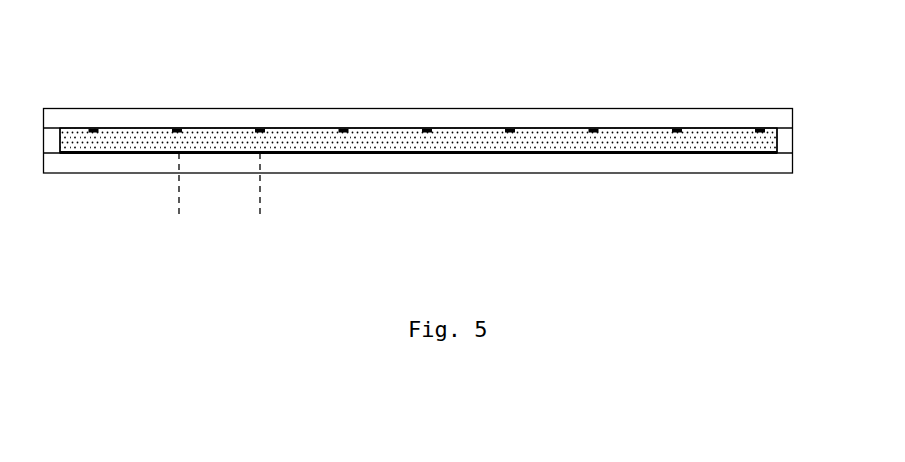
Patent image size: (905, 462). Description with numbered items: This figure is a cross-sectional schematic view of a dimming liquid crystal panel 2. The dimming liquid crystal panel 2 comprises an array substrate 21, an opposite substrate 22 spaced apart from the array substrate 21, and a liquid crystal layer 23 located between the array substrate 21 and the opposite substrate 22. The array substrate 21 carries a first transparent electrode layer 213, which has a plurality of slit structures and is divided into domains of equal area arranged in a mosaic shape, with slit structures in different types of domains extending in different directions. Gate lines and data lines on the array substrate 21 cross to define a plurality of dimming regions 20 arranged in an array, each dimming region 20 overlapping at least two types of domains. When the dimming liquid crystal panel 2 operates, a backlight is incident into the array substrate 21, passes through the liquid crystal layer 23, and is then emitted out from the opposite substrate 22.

The dimming liquid crystal panel 2 is at (460, 62).
The dimming regions 20 is at (221, 199).
The array substrate 21 is at (786, 166).
The opposite substrate 22 is at (785, 121).
The liquid crystal layer 23 is at (648, 140).
The first transparent electrode layer 213 is at (108, 152).